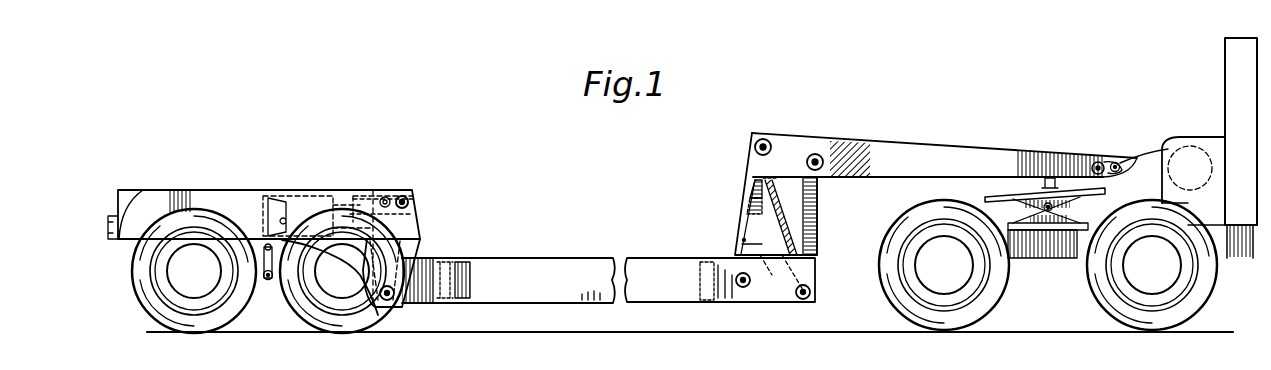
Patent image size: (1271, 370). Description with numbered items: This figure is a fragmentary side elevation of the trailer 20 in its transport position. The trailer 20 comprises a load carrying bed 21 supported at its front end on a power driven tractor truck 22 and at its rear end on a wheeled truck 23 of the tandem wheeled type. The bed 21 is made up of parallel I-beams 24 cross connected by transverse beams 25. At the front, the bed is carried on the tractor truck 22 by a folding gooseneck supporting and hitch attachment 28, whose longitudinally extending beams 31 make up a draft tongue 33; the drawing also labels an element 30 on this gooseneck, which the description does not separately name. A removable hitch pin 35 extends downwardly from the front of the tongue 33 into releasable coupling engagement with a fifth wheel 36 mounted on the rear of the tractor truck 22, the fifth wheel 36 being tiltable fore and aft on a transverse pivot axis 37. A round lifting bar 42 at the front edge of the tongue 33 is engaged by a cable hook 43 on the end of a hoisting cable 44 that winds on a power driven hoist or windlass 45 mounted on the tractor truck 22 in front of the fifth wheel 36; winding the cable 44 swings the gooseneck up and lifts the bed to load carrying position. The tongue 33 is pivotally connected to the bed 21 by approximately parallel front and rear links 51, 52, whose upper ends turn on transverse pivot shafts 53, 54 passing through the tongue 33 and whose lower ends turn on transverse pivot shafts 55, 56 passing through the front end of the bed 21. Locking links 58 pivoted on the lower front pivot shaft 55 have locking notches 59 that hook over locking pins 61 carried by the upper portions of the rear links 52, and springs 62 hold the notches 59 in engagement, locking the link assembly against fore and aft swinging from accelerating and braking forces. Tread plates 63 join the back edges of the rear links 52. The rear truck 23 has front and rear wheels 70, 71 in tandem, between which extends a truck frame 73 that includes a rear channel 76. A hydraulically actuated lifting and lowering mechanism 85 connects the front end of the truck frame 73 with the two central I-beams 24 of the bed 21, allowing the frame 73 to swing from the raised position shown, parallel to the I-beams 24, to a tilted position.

The trailer 20 is at (552, 178).
The load carrying bed 21 is at (573, 257).
The power driven tractor truck 22 is at (1209, 110).
The wheeled truck 23 is at (259, 182).
The I-beams 24 is at (608, 280).
The transverse beams 25 is at (470, 283).
The folding gooseneck supporting and hitch attachment 28 is at (882, 142).
The gooseneck beam member 30 is at (948, 146).
The longitudinally extending beams 31 is at (910, 170).
The draft tongue 33 is at (990, 152).
The removable hitch pin 35 is at (1050, 178).
The fifth wheel 36 is at (992, 200).
The transverse pivot axis 37 is at (1040, 225).
The lifting bar 42 is at (1120, 171).
The cable hook 43 is at (1100, 161).
The hoisting cable 44 is at (1140, 156).
The power driven hoist or windlass 45 is at (1190, 145).
The front links 51 is at (820, 204).
The rear links 52 is at (748, 213).
The transverse pivot shaft 53 is at (817, 154).
The transverse pivot shaft 54 is at (766, 139).
The lower front pivot shaft 55 is at (811, 300).
The transverse pivot shaft 56 is at (750, 302).
The locking links 58 is at (777, 215).
The locking notches 59 is at (748, 202).
The locking pins or shafts 61 is at (752, 186).
The springs 62 is at (751, 280).
The tread plates 63 is at (740, 237).
The front wheels 70 is at (345, 333).
The rear wheels 71 is at (212, 333).
The truck frame 73 is at (170, 190).
The rear channel 76 is at (143, 190).
The hydraulically actuated lifting and lowering mechanism 85 is at (362, 190).